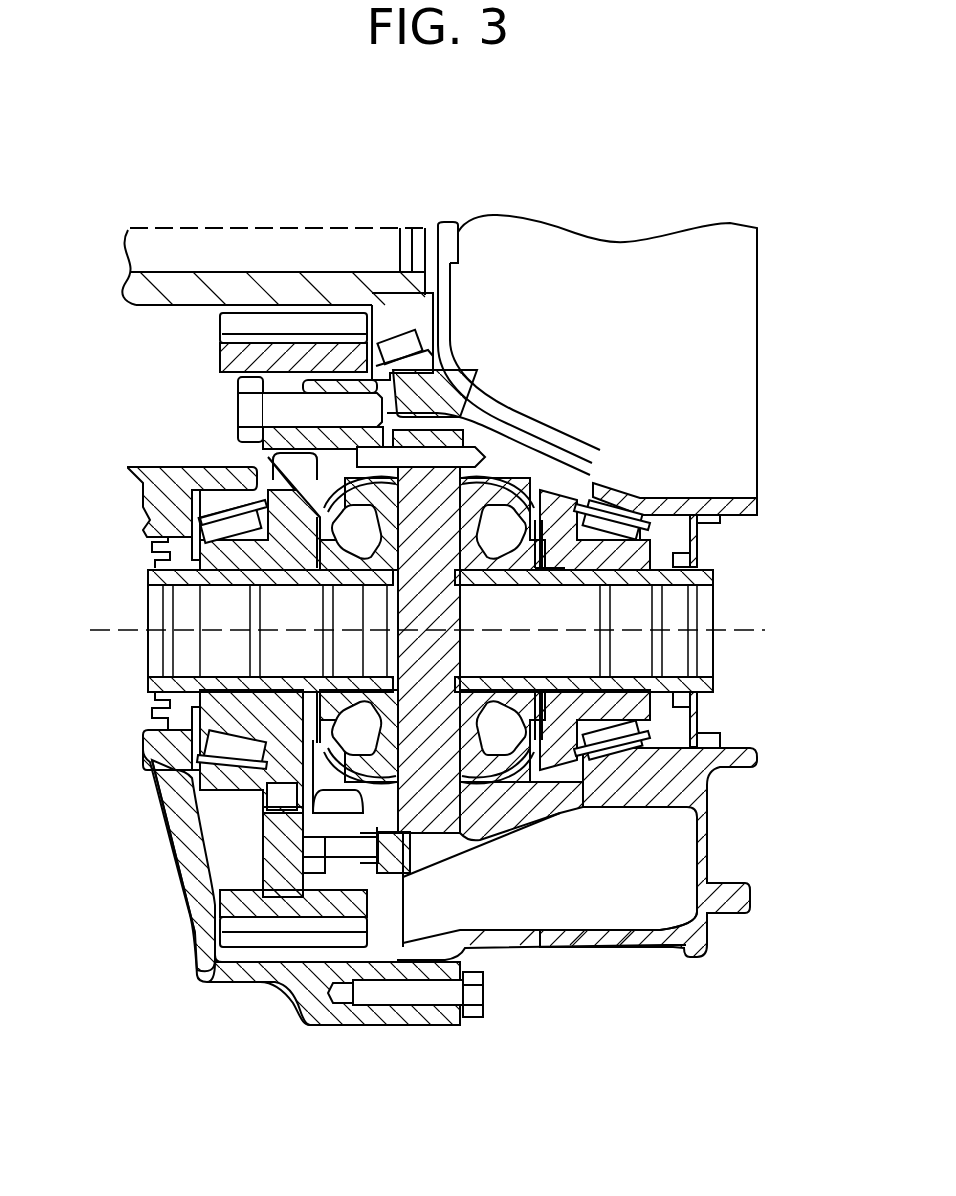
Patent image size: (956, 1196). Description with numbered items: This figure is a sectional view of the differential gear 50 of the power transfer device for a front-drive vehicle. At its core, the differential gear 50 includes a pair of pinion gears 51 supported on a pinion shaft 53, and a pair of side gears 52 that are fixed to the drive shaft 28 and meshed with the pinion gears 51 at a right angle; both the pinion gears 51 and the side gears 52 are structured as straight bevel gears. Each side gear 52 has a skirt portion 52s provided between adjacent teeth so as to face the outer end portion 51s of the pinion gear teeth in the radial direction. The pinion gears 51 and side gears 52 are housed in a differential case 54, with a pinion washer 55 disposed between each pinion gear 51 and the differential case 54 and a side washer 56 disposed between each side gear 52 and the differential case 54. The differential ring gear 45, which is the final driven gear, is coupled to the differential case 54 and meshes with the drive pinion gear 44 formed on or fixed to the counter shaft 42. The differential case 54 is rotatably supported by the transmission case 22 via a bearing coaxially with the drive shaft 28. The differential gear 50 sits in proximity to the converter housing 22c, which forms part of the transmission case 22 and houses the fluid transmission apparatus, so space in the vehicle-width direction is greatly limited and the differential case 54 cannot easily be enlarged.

The transmission case 22 is at (160, 752).
The converter housing 22c is at (768, 502).
The drive shaft 28 is at (92, 631).
The counter shaft 42 is at (138, 305).
The drive pinion gear 44 is at (220, 315).
The differential ring gear 45 is at (220, 354).
The differential gear 50 is at (754, 603).
The pinion gear 51 is at (500, 460).
The outer end portion 51s is at (517, 770).
The side gear 52 is at (330, 690).
The skirt portion 52s is at (540, 482).
The pinion shaft 53 is at (447, 832).
The differential case 54 is at (276, 485).
The pinion washer 55 is at (481, 425).
The side washer 56 is at (555, 500).